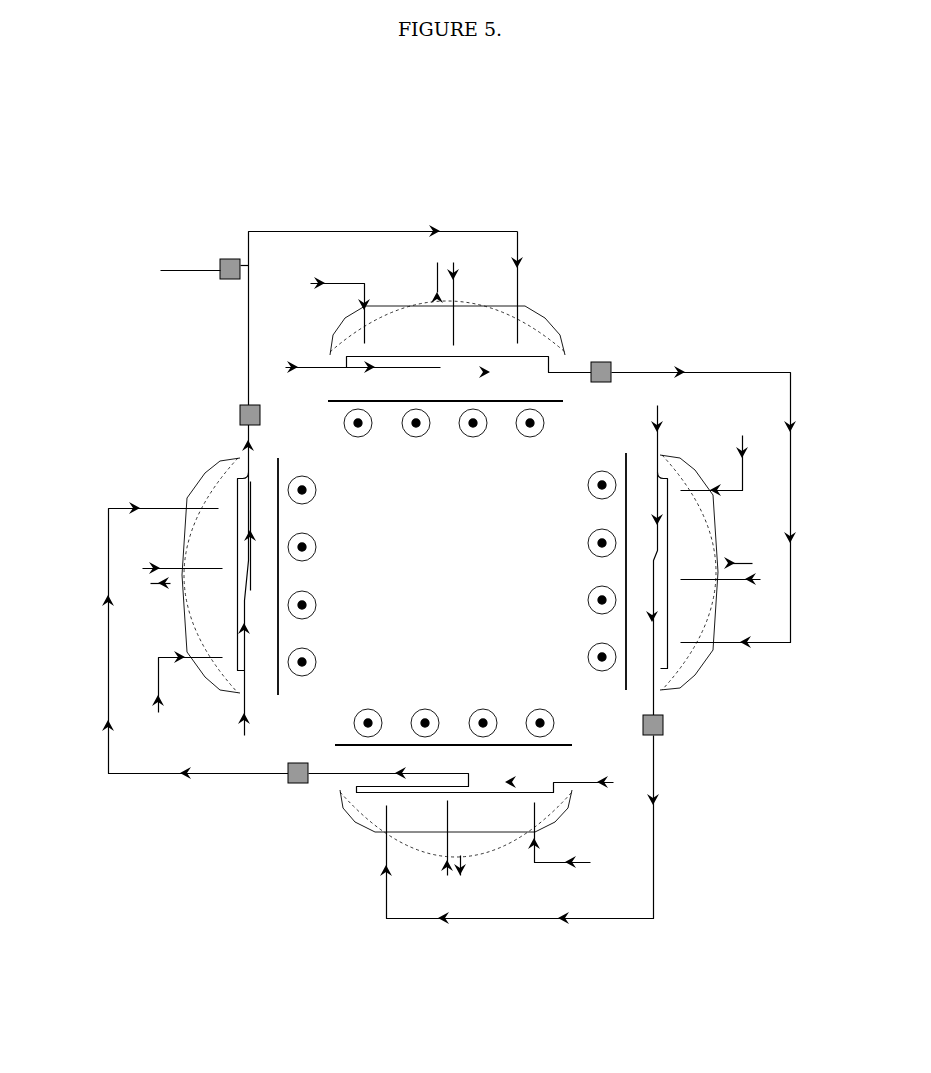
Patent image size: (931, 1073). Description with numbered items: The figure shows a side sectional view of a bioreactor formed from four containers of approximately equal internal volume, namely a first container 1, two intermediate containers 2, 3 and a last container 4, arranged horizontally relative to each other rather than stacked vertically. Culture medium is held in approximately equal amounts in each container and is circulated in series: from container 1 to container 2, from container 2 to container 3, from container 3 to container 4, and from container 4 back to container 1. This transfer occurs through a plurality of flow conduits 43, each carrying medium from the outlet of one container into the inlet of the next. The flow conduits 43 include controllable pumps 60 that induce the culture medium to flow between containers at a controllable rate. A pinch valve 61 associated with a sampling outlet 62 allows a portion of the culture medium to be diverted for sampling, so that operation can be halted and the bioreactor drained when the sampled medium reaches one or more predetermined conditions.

The first container 1 is at (310, 217).
The container 2 is at (808, 455).
The container 3 is at (337, 935).
The last container 4 is at (97, 465).
The flow conduits 43 is at (290, 231).
The controllable pumps 60 is at (240, 415).
The pinch valve 61 is at (230, 265).
The sampling outlet 62 is at (165, 270).